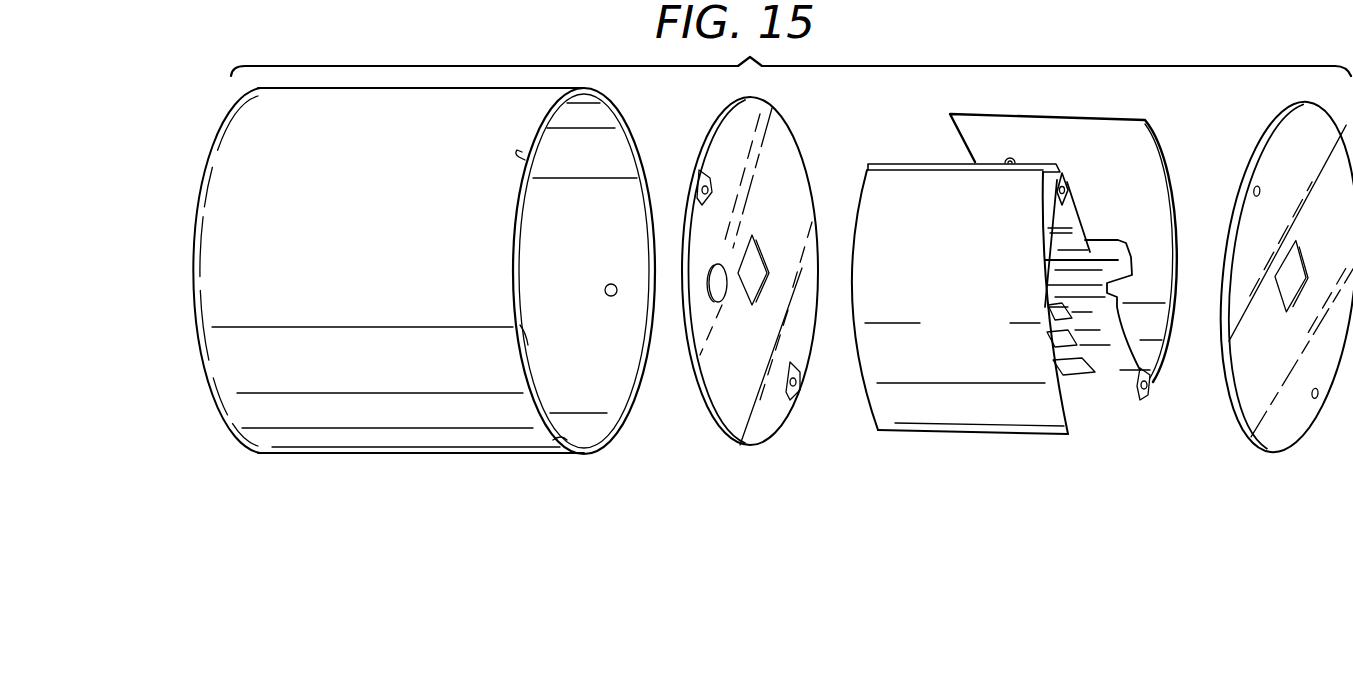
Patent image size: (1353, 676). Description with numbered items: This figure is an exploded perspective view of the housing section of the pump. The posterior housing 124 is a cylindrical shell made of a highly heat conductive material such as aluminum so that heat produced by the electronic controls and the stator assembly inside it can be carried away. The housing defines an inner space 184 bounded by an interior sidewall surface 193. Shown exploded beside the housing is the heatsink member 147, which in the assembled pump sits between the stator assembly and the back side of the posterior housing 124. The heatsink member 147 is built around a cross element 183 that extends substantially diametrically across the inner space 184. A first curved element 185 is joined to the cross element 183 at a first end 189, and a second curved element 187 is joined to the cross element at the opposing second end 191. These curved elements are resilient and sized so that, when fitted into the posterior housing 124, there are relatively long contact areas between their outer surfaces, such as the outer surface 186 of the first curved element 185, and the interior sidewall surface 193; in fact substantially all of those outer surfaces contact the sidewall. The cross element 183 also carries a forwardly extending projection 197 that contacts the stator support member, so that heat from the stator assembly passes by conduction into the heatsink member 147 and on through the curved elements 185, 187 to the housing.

The posterior housing 124 is at (447, 295).
The inner space 184 is at (613, 143).
The interior sidewall surface 193 is at (594, 432).
The heatsink member 147 is at (1028, 291).
The first curved element 185 is at (907, 410).
The outer surface 186 is at (987, 324).
The first end 189 is at (910, 163).
The second curved element 187 is at (1140, 155).
The forwardly extending projection 197 is at (1100, 240).
The second end 191 is at (1083, 383).
The cross element 183 is at (1115, 365).